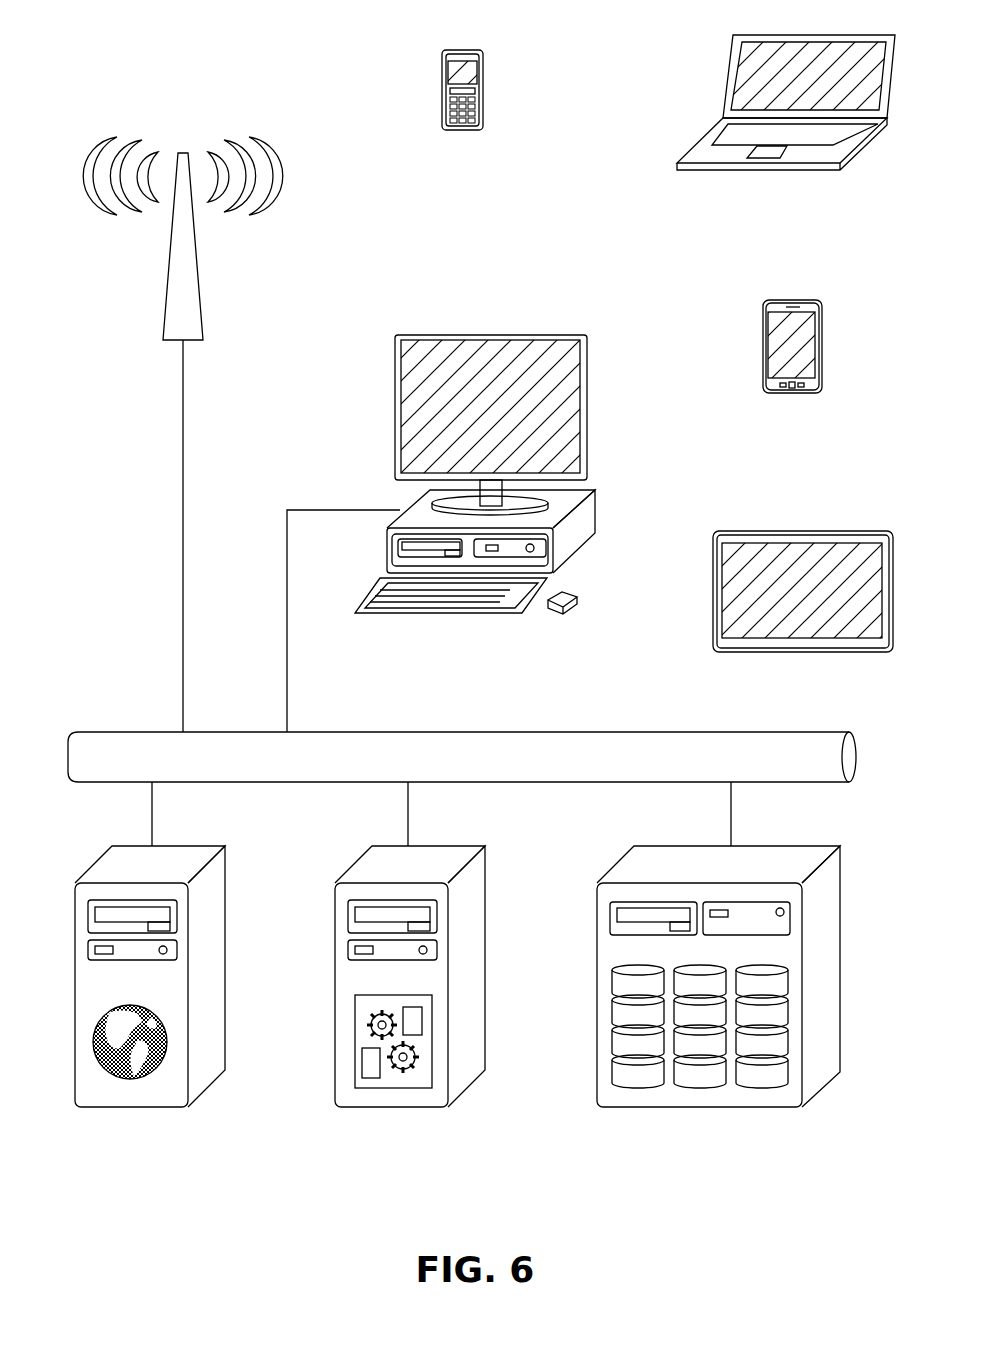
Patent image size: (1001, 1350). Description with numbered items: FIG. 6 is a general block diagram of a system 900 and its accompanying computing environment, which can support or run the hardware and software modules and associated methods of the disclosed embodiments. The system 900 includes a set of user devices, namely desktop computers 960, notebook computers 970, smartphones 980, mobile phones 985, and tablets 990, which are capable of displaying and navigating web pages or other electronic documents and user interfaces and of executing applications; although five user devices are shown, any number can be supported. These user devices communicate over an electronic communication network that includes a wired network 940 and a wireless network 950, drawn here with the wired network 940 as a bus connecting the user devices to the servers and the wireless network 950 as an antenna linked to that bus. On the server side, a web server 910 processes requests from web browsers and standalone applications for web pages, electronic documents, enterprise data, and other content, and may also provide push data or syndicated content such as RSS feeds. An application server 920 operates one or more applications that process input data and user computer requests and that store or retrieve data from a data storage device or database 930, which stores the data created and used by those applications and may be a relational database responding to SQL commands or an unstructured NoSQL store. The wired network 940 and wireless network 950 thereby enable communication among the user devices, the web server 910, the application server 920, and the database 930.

The system 900 is at (142, 70).
The web server 910 is at (140, 1098).
The application server 920 is at (395, 1098).
The data storage device or database 930 is at (680, 1087).
The wired network 940 is at (462, 789).
The wireless network 950 is at (208, 245).
The desktop computer 960 is at (470, 626).
The notebook computer 970 is at (778, 180).
The smartphone 980 is at (797, 405).
The mobile phone 985 is at (467, 150).
The tablet 990 is at (798, 643).